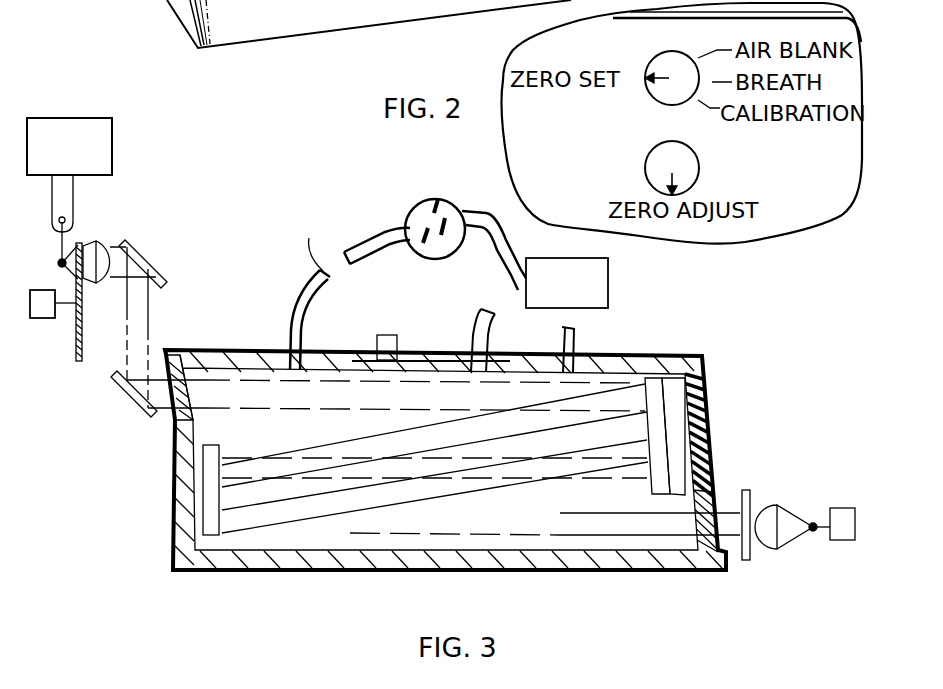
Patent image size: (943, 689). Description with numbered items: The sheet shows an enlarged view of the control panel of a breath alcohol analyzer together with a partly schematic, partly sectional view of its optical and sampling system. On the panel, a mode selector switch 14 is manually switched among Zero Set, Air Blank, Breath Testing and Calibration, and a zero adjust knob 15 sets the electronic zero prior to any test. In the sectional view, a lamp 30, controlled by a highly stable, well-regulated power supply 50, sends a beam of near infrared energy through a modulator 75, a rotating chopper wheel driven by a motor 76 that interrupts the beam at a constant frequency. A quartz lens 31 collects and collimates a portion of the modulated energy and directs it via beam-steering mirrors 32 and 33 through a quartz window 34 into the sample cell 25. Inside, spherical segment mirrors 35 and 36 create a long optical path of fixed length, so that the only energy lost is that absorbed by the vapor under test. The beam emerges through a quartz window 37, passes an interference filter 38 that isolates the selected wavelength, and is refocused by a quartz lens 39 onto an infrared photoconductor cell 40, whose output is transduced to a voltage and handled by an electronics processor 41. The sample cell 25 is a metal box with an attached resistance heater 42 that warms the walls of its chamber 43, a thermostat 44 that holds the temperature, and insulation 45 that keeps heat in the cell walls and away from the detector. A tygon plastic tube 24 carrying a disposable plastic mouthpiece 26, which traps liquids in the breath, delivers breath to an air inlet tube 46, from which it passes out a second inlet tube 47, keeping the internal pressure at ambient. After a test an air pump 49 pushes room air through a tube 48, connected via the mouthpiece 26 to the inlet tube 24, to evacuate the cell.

In FIG. 2, the mode selector switch 14 is at (660, 93).
In FIG. 2, the zero adjust knob 15 is at (690, 167).
In FIG. 3, the tygon plastic tube 24 is at (356, 244).
In FIG. 3, the sample cell 25 is at (670, 325).
In FIG. 3, the disposable plastic mouthpiece 26 is at (426, 200).
In FIG. 3, the lamp 30 is at (60, 261).
In FIG. 3, the quartz lens 31 is at (99, 243).
In FIG. 3, the beam-steering mirror 32 is at (140, 252).
In FIG. 3, the beam-steering mirror 33 is at (131, 411).
In FIG. 3, the quartz window 34 is at (190, 392).
In FIG. 3, the spherical segment mirror 35 is at (213, 453).
In FIG. 3, the spherical segment mirror 36 is at (655, 438).
In FIG. 3, the quartz window 37 is at (697, 528).
In FIG. 3, the interference filter 38 is at (745, 490).
In FIG. 3, the quartz lens 39 is at (773, 505).
In FIG. 3, the infrared photoconductor cell 40 is at (812, 523).
In FIG. 3, the electronics processor 41 is at (845, 540).
In FIG. 3, the resistance heater 42 is at (430, 360).
In FIG. 3, the chamber 43 is at (540, 571).
In FIG. 3, the thermostat 44 is at (400, 340).
In FIG. 3, the insulation 45 is at (712, 416).
In FIG. 3, the air inlet tube 46 is at (303, 345).
In FIG. 3, the air inlet tube 47 is at (575, 334).
In FIG. 3, the tube 48 is at (500, 259).
In FIG. 3, the air pump 49 is at (609, 270).
In FIG. 3, the power supply 50 is at (92, 146).
In FIG. 3, the modulator 75 is at (83, 316).
In FIG. 3, the motor 76 is at (42, 318).